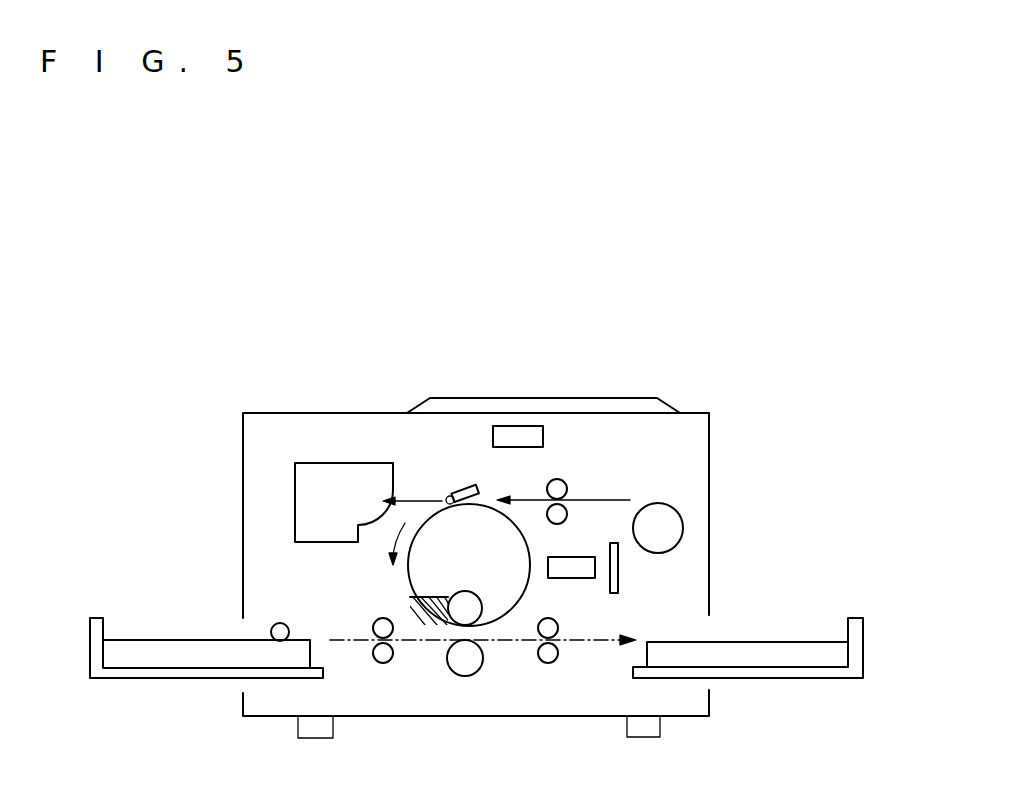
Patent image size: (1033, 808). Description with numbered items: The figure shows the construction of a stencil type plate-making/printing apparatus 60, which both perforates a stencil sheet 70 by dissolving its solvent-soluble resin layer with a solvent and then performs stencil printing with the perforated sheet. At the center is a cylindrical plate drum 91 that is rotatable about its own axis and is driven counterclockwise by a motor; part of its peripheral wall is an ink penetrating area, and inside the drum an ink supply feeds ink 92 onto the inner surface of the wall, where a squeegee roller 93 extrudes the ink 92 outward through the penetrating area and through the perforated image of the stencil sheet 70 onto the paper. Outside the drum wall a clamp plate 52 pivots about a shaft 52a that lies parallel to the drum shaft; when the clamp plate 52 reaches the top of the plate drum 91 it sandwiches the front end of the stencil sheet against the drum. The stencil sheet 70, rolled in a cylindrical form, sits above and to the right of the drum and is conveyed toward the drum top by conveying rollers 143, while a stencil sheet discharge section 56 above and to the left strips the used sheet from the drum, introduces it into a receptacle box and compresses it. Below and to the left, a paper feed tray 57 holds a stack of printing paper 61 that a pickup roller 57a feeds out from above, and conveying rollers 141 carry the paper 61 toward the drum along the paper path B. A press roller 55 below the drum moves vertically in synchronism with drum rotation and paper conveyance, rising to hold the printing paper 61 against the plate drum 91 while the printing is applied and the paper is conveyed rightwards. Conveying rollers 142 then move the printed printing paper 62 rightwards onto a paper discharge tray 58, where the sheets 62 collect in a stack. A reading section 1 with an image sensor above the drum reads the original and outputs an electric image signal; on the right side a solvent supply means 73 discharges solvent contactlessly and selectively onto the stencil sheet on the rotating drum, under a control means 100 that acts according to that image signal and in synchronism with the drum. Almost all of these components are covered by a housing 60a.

The plate-making/printing apparatus 60 is at (455, 312).
The housing 60a is at (709, 520).
The stencil sheet discharge section 56 is at (335, 463).
The reading section 1 is at (523, 426).
The plate drum 91 is at (510, 612).
The squeegee roller 93 is at (461, 591).
The ink 92 is at (410, 590).
The clamp plate 52 is at (463, 487).
The shaft 52a is at (449, 496).
The conveying rollers 143 is at (562, 480).
The stencil sheet 70 is at (676, 508).
The solvent supply means 73 is at (595, 578).
The control means 100 is at (643, 570).
The conveying rollers 141 is at (383, 663).
The press roller 55 is at (465, 676).
The conveying rollers 142 is at (548, 663).
The paper transport path B is at (583, 640).
The paper feed tray 57 is at (192, 680).
The printing paper 61 is at (167, 640).
The pickup roller 57a is at (276, 624).
The paper discharge tray 58 is at (807, 680).
The printing paper 62 is at (810, 640).